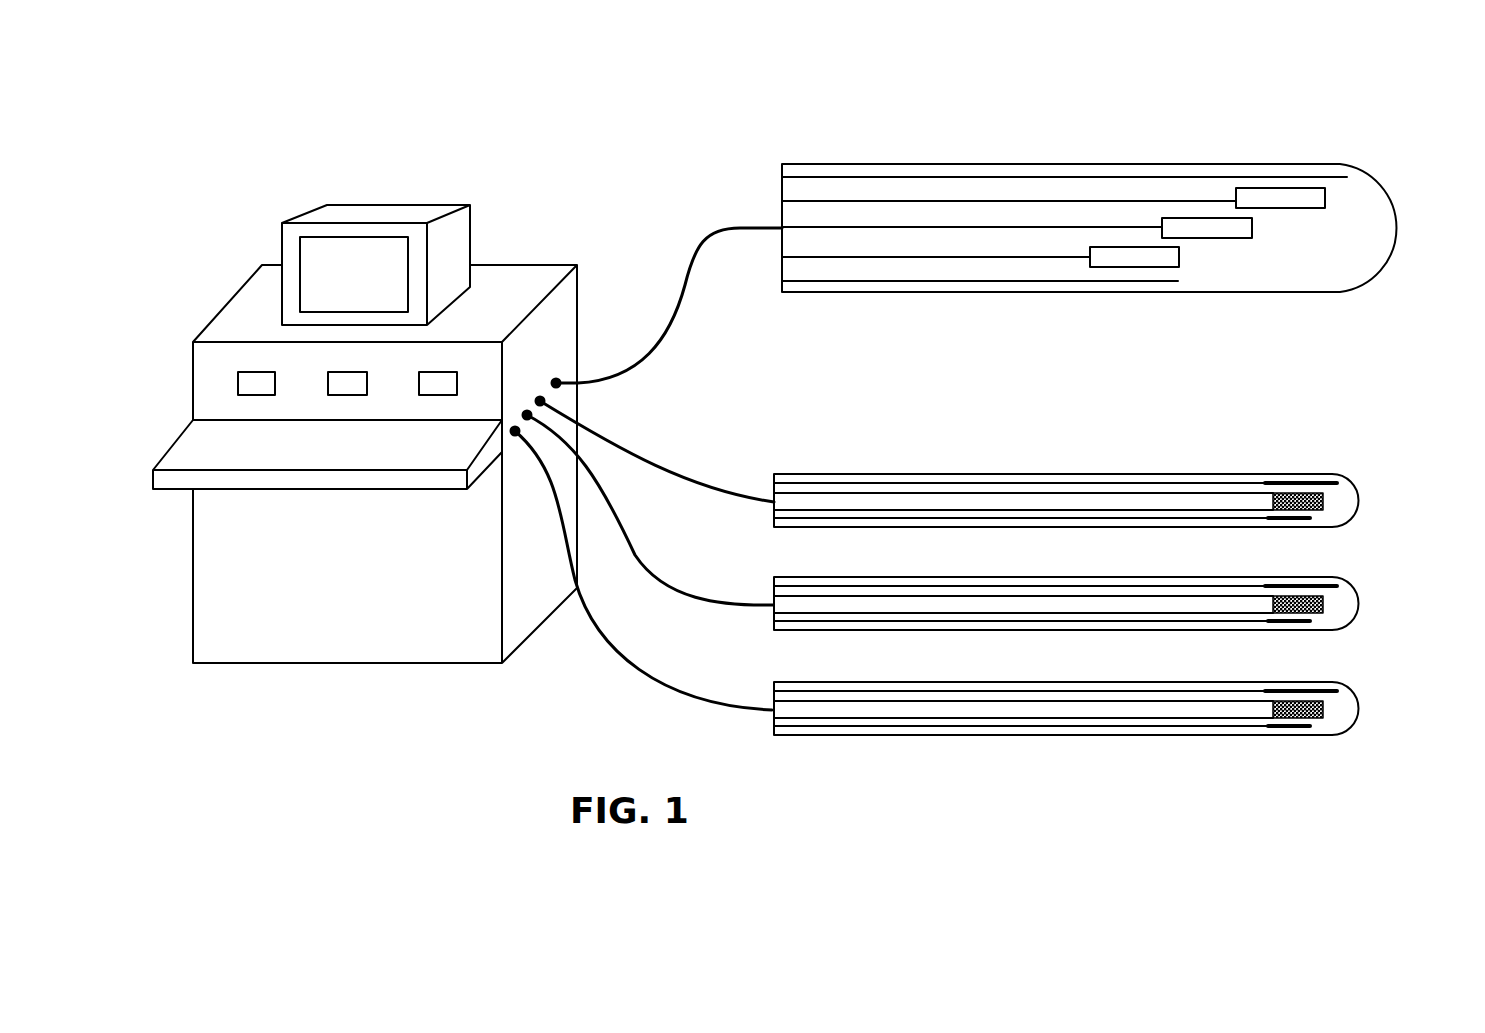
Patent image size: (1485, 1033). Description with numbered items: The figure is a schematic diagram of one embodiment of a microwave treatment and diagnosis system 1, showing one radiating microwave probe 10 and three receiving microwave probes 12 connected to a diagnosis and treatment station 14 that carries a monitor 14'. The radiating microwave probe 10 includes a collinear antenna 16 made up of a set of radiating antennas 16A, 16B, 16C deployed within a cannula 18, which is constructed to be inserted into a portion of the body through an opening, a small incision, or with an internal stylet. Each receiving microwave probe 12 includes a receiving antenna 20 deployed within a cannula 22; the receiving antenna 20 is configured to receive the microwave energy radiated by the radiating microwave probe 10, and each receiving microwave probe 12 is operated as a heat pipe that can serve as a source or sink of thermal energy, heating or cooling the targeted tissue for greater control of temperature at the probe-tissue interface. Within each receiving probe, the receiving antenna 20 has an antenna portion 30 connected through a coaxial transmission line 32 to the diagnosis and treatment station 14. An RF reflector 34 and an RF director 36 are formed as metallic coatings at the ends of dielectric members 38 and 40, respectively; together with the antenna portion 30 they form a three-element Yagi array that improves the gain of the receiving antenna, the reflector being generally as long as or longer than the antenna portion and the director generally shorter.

The microwave treatment and diagnosis system 1 is at (1430, 320).
The radiating microwave probe 10 is at (1089, 221).
The receiving microwave probe 12 is at (1108, 599).
The diagnosis and treatment station 14 is at (364, 464).
The monitor 14' is at (348, 265).
The collinear antenna 16 is at (1068, 272).
The radiating antenna 16A is at (1298, 207).
The radiating antenna 16B is at (1247, 239).
The radiating antenna 16C is at (1180, 260).
The cannula 18 is at (951, 162).
The receiving antenna 20 is at (1350, 518).
The cannula 22 is at (1050, 473).
The antenna portion 30 is at (1325, 500).
The coaxial transmission line 32 is at (1133, 500).
The RF reflector 34 is at (1303, 482).
The RF director 36 is at (1292, 520).
The dielectric member 38 is at (935, 482).
The dielectric member 40 is at (861, 518).